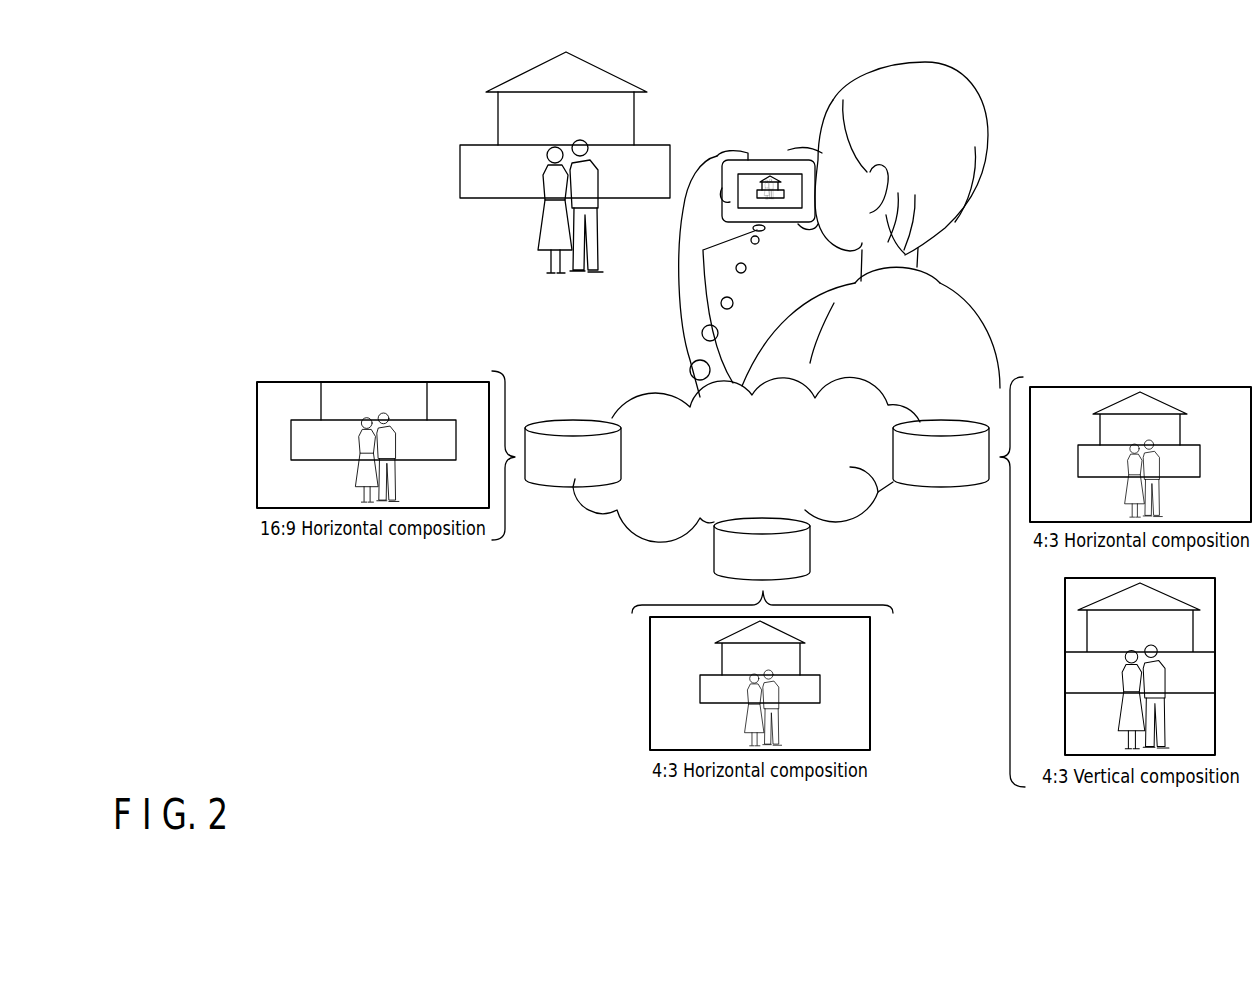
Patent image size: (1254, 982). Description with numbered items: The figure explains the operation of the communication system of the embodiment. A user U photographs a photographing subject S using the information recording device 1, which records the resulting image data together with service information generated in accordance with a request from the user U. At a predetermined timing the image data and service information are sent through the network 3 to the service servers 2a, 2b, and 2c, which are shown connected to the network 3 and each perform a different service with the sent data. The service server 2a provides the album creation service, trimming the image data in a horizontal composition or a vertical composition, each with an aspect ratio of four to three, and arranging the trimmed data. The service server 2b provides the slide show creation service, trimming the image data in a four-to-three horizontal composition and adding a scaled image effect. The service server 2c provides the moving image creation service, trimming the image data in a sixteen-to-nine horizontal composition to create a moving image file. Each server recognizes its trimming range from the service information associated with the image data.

The photographing subject S is at (484, 146).
The user U is at (990, 128).
The information recording device 1 is at (765, 156).
The network 3 is at (645, 395).
The service server 2a is at (961, 421).
The service server 2b is at (813, 556).
The service server 2c is at (547, 421).